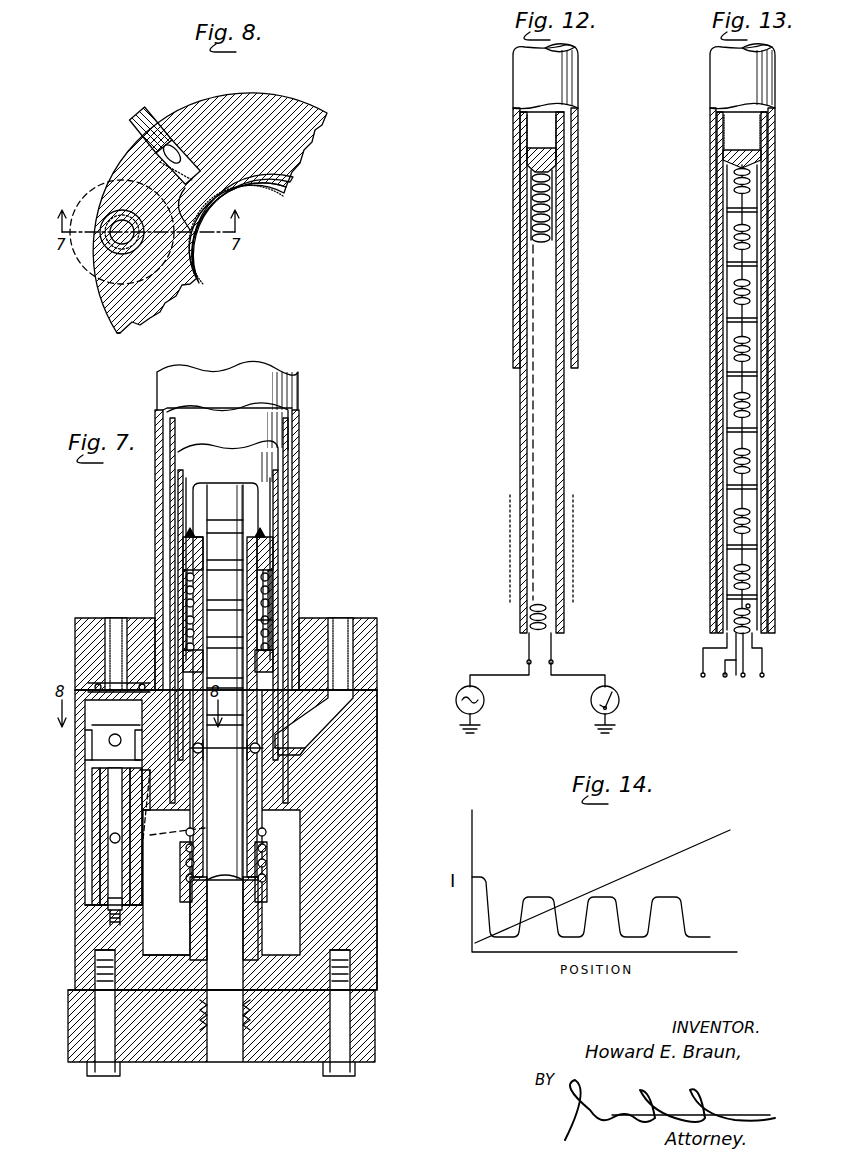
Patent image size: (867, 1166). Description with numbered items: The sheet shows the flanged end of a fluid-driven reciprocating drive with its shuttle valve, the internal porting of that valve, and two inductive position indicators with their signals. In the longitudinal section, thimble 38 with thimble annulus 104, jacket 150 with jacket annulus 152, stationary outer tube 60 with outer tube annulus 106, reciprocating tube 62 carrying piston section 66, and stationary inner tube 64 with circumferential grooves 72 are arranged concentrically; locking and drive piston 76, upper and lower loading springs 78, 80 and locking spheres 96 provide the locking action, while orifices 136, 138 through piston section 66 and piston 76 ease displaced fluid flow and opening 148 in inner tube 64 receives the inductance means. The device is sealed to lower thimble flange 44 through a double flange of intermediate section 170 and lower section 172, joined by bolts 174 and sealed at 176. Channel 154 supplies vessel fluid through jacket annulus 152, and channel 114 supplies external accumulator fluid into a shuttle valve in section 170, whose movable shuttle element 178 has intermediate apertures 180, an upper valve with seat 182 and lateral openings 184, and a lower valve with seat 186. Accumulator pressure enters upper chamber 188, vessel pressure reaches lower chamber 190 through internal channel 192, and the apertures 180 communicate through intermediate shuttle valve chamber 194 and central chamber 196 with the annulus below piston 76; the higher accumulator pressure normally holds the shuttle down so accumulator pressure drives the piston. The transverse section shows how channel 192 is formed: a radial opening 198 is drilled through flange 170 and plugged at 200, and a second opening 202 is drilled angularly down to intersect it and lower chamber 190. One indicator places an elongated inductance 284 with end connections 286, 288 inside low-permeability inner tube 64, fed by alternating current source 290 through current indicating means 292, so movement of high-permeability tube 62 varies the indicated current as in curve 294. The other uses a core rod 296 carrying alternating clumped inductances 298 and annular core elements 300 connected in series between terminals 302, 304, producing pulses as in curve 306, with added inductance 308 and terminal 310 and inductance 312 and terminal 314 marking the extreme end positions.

In FIG. 7, the thimble 38 is at (300, 433).
In FIG. 7, the lower thimble flange 44 is at (360, 620).
In FIG. 7, the stationary outer tube 60 is at (272, 562).
In FIG. 7, the reciprocating tube 62 is at (262, 547).
In FIG. 12, the reciprocating tube 62 is at (575, 196).
In FIG. 13, the reciprocating tube 62 is at (775, 140).
In FIG. 7, the stationary inner tube 64 is at (210, 548).
In FIG. 12, the stationary inner tube 64 is at (562, 272).
In FIG. 13, the stationary inner tube 64 is at (768, 315).
In FIG. 7, the piston section 66 is at (262, 598).
In FIG. 7, the circumferential grooves 72 is at (200, 530).
In FIG. 7, the locking and drive piston 76 is at (198, 660).
In FIG. 7, the upper loading spring 78 is at (185, 580).
In FIG. 7, the lower loading spring 80 is at (190, 855).
In FIG. 7, the locking spheres 96 is at (203, 760).
In FIG. 8, the thimble annulus 104 is at (200, 284).
In FIG. 7, the thimble annulus 104 is at (288, 470).
In FIG. 7, the outer tube annulus 106 is at (190, 530).
In FIG. 8, the channel 114 is at (103, 247).
In FIG. 7, the channel 114 is at (112, 636).
In FIG. 7, the orifice 136 is at (250, 755).
In FIG. 7, the orifice 138 is at (270, 752).
In FIG. 7, the opening 148 is at (222, 1062).
In FIG. 12, the opening 148 is at (545, 318).
In FIG. 8, the jacket 150 is at (262, 196).
In FIG. 7, the jacket 150 is at (283, 500).
In FIG. 7, the jacket annulus 152 is at (278, 522).
In FIG. 7, the channel 154 is at (330, 715).
In FIG. 8, the intermediate flange section 170 is at (306, 118).
In FIG. 7, the intermediate flange section 170 is at (350, 812).
In FIG. 7, the lower flange section 172 is at (295, 1062).
In FIG. 7, the bolts 174 is at (355, 1045).
In FIG. 7, the seal 176 is at (130, 990).
In FIG. 7, the shuttle element 178 is at (100, 815).
In FIG. 7, the intermediate apertures 180 is at (105, 860).
In FIG. 7, the seat 182 is at (92, 757).
In FIG. 7, the lateral openings 184 is at (100, 740).
In FIG. 7, the seat 186 is at (95, 918).
In FIG. 7, the upper chamber 188 is at (95, 785).
In FIG. 8, the lower chamber 190 is at (100, 296).
In FIG. 7, the lower chamber 190 is at (95, 900).
In FIG. 8, the internal channel 192 is at (162, 196).
In FIG. 7, the internal channel 192 is at (200, 828).
In FIG. 7, the intermediate shuttle valve chamber 194 is at (110, 838).
In FIG. 7, the central chamber 196 is at (165, 930).
In FIG. 8, the radial opening 198 is at (184, 138).
In FIG. 8, the plug 200 is at (148, 105).
In FIG. 8, the second opening 202 is at (135, 182).
In FIG. 12, the elongated inductance 284 is at (548, 235).
In FIG. 12, the end connection 286 is at (527, 662).
In FIG. 12, the end connection 288 is at (553, 662).
In FIG. 12, the alternating current source 290 is at (484, 712).
In FIG. 12, the current indicating means 292 is at (592, 698).
In FIG. 14, the curve 294 is at (660, 852).
In FIG. 13, the core rod 296 is at (758, 330).
In FIG. 13, the clumped inductances 298 is at (750, 232).
In FIG. 13, the annular core elements 300 is at (745, 266).
In FIG. 13, the terminal 302 is at (725, 677).
In FIG. 13, the terminal 304 is at (743, 677).
In FIG. 14, the curve 306 is at (672, 895).
In FIG. 13, the added inductance 308 is at (752, 190).
In FIG. 13, the separate terminal 310 is at (700, 675).
In FIG. 13, the inductance 312 is at (752, 618).
In FIG. 13, the separate terminal 314 is at (764, 675).